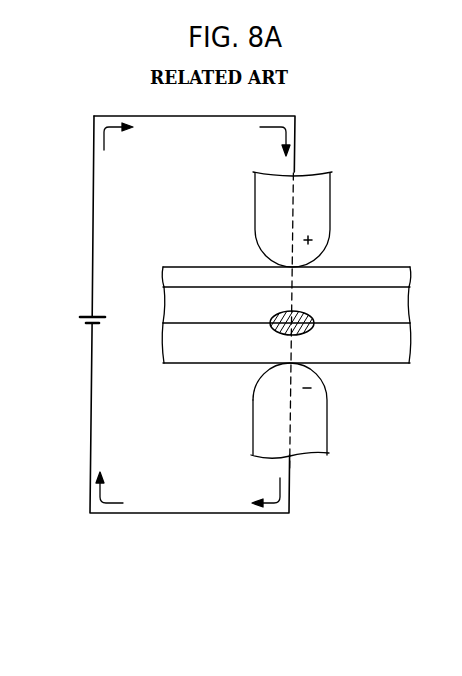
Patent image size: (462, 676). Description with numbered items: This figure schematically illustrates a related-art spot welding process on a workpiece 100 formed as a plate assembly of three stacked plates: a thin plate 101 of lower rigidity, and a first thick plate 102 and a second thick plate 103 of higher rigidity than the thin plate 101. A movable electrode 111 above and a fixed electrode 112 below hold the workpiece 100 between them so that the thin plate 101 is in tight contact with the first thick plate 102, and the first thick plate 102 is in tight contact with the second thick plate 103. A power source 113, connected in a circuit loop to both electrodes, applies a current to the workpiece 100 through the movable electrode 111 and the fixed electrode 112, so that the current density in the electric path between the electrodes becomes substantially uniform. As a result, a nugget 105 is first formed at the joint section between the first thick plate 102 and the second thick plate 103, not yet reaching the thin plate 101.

The workpiece 100 is at (310, 285).
The thin plate 101 is at (399, 282).
The first thick plate 102 is at (399, 310).
The second thick plate 103 is at (399, 345).
The nugget 105 is at (311, 329).
The movable electrode 111 is at (334, 208).
The fixed electrode 112 is at (318, 432).
The power source 113 is at (89, 316).